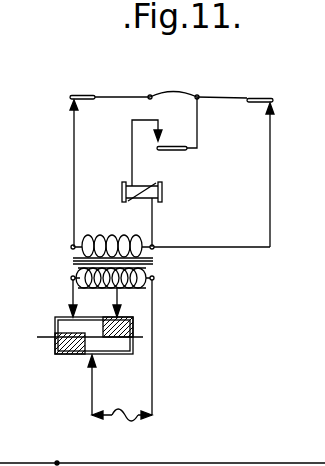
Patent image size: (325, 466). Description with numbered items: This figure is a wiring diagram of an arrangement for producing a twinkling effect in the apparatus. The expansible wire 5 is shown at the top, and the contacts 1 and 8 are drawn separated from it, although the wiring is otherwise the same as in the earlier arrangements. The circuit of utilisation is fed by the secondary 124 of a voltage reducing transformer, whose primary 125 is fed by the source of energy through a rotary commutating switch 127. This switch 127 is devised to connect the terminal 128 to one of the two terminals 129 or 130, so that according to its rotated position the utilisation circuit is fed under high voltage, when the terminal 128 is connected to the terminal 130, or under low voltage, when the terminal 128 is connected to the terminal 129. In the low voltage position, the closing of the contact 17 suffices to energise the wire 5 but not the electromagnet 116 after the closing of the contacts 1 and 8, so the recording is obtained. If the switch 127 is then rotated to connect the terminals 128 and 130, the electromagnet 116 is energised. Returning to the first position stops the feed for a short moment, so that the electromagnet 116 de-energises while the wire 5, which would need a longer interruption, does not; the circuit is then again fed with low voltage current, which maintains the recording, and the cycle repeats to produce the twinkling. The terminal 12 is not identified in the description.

The terminal 12 is at (76, 95).
The expansible wire 5 is at (170, 94).
The contact 17 is at (273, 99).
The contact 8 is at (160, 123).
The contact 1 is at (170, 151).
The electromagnet 116 is at (163, 194).
The secondary 124 is at (118, 237).
The primary 125 is at (154, 283).
The terminal 129 is at (72, 293).
The terminal 130 is at (116, 294).
The rotary commutating switch 127 is at (134, 329).
The terminal 128 is at (91, 362).